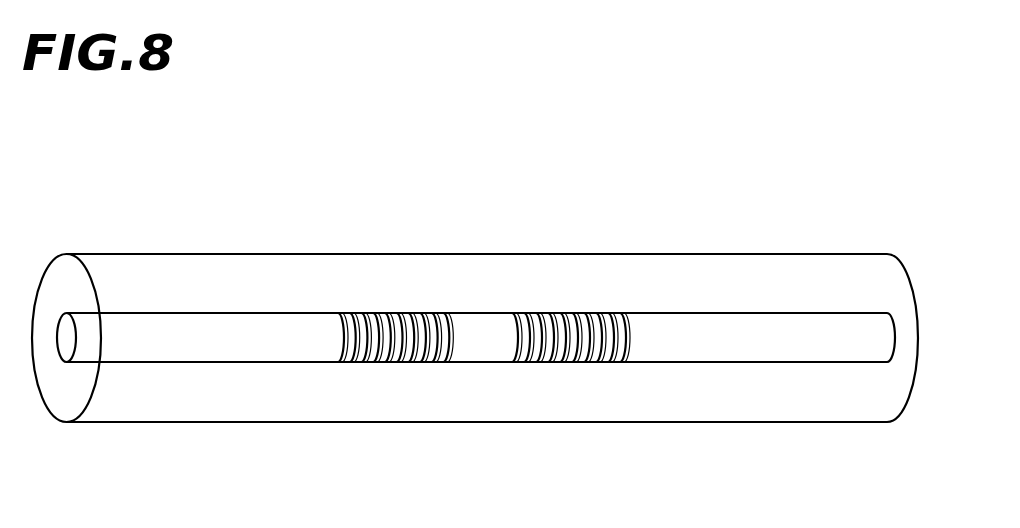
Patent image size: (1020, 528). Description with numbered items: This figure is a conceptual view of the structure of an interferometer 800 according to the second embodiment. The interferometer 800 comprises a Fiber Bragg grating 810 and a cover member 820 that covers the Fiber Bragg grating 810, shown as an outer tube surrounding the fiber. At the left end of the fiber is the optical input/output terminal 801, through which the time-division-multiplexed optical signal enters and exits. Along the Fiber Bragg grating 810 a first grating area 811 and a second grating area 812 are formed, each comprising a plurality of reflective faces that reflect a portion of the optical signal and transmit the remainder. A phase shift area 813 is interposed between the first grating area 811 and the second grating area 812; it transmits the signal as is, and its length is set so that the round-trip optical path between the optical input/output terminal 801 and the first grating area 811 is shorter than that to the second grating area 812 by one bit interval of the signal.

The interferometer 800 is at (898, 133).
The optical input/output terminal 801 is at (58, 282).
The Fiber Bragg grating 810 is at (707, 335).
The first grating area 811 is at (395, 313).
The second grating area 812 is at (560, 313).
The phase shift area 813 is at (478, 332).
The cover member 820 is at (837, 282).